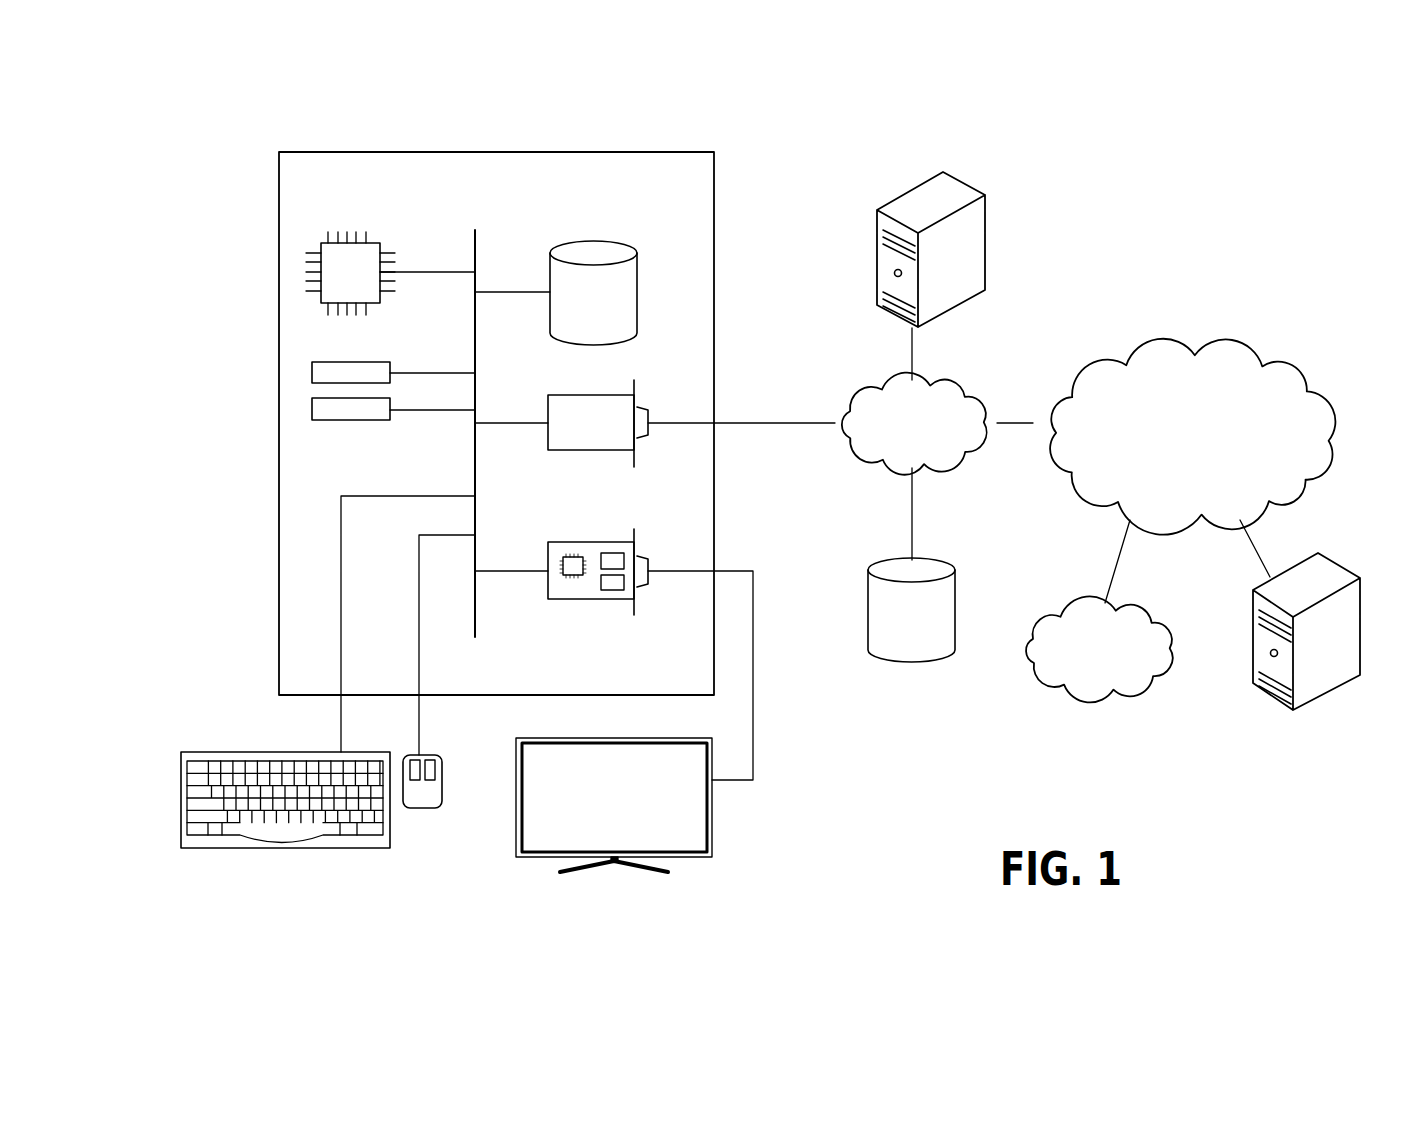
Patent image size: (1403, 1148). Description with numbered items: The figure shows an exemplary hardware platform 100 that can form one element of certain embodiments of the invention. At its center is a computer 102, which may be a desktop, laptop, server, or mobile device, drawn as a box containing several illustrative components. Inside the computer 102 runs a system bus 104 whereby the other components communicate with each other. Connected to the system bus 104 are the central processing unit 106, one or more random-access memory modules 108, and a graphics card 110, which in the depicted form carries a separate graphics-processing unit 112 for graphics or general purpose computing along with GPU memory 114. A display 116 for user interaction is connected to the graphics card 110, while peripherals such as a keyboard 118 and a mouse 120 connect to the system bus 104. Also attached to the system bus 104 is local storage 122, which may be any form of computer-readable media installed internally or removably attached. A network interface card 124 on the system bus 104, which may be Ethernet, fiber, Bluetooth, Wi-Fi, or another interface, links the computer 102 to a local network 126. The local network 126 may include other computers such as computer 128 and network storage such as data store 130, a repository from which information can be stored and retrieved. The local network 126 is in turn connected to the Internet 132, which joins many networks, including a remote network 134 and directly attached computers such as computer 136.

The hardware platform 100 is at (1290, 148).
The computer 102 is at (666, 152).
The system bus 104 is at (476, 241).
The central processing unit 106 is at (375, 240).
The random-access memory modules 108 is at (390, 405).
The graphics card 110 is at (590, 573).
The graphics-processing unit 112 is at (572, 570).
The GPU memory 114 is at (610, 585).
The display 116 is at (712, 835).
The keyboard 118 is at (285, 848).
The mouse 120 is at (418, 808).
The local storage 122 is at (640, 273).
The network interface card 124 is at (548, 405).
The local network 126 is at (965, 378).
The computer 128 is at (968, 183).
The data store 130 is at (945, 562).
The Internet 132 is at (1237, 340).
The remote network 134 is at (1160, 602).
The computer 136 is at (1337, 560).